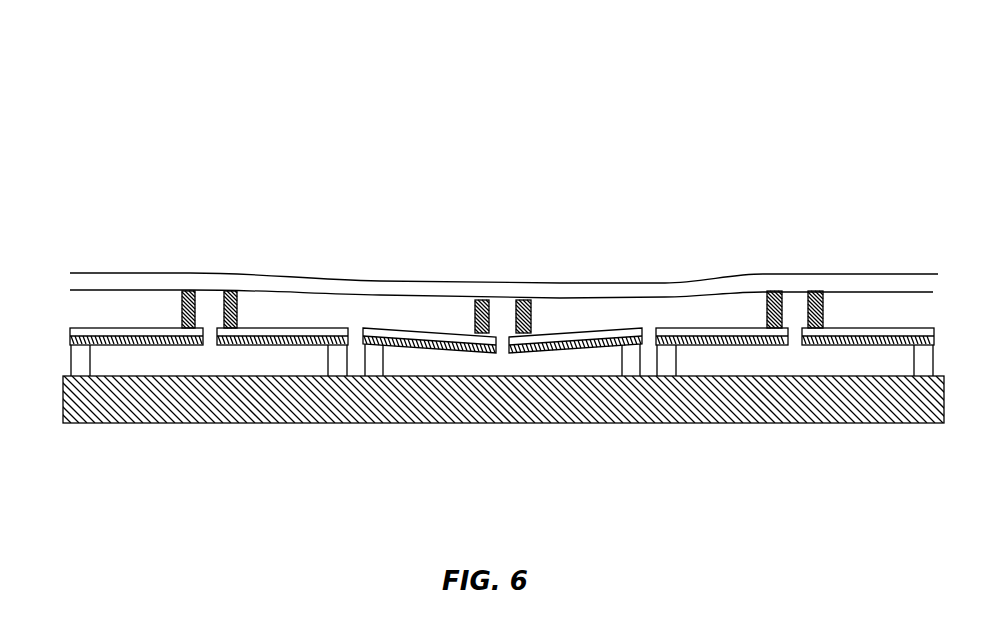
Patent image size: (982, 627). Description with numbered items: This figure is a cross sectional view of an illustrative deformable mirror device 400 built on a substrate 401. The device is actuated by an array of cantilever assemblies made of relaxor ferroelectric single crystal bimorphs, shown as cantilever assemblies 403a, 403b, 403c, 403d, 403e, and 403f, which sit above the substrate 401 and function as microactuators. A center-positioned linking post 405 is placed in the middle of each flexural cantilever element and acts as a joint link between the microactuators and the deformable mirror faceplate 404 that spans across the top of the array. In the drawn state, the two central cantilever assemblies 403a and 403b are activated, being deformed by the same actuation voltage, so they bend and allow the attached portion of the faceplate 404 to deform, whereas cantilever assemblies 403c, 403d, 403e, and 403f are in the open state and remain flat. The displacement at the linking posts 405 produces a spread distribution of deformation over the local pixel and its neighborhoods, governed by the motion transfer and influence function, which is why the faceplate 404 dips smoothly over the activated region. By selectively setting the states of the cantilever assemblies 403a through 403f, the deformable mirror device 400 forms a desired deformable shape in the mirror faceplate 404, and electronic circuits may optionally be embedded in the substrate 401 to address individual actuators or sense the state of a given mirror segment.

The deformable mirror device 400 is at (611, 116).
The substrate 401 is at (108, 422).
The cantilever assembly 403a is at (422, 333).
The cantilever assembly 403b is at (584, 335).
The cantilever assembly 403c is at (143, 328).
The cantilever assembly 403d is at (273, 328).
The cantilever assembly 403e is at (728, 328).
The cantilever assembly 403f is at (873, 328).
The deformable mirror faceplate 404 is at (635, 283).
The linking post 405 is at (485, 300).